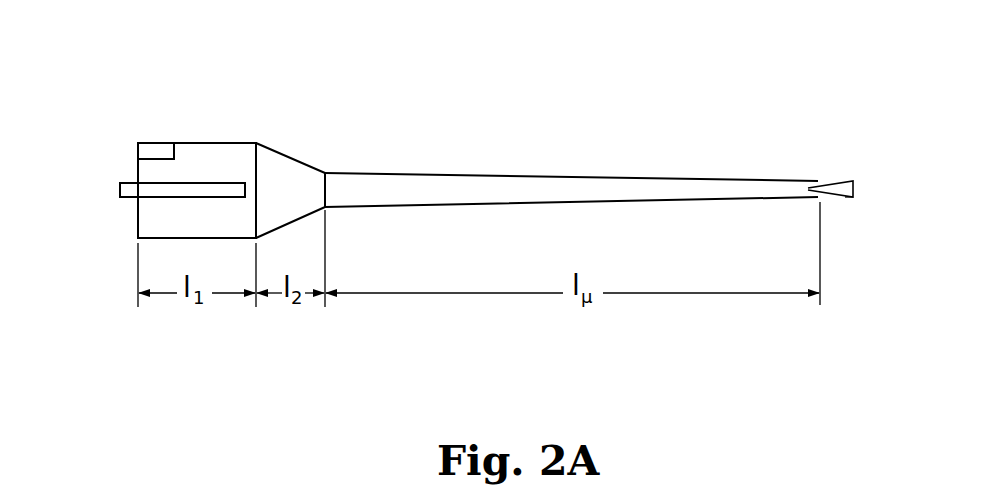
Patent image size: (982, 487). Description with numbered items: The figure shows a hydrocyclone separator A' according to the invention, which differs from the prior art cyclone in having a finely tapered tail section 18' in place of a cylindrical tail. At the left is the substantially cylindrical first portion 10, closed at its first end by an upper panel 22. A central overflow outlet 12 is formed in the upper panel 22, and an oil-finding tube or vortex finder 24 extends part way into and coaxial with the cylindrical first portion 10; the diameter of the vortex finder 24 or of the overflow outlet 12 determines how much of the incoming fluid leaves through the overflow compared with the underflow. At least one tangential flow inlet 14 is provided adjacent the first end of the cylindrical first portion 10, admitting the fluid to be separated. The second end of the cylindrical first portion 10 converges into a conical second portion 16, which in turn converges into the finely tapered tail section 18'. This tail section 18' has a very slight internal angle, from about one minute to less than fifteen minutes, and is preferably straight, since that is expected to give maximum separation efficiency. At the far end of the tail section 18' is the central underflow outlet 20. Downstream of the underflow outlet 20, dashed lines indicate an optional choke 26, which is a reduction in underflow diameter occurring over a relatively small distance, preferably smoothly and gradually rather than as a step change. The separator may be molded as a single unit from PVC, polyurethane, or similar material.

The substantially cylindrical first portion 10 is at (197, 142).
The central overflow outlet 12 is at (127, 190).
The tangential flow inlet 14 is at (160, 150).
The conical second portion 16 is at (280, 150).
The finely tapered tail section 18' is at (571, 145).
The underflow outlet 20 is at (833, 186).
The upper panel 22 is at (137, 168).
The vortex finder 24 is at (205, 187).
The choke 26 is at (856, 199).
The hydrocyclone separator A' is at (556, 89).